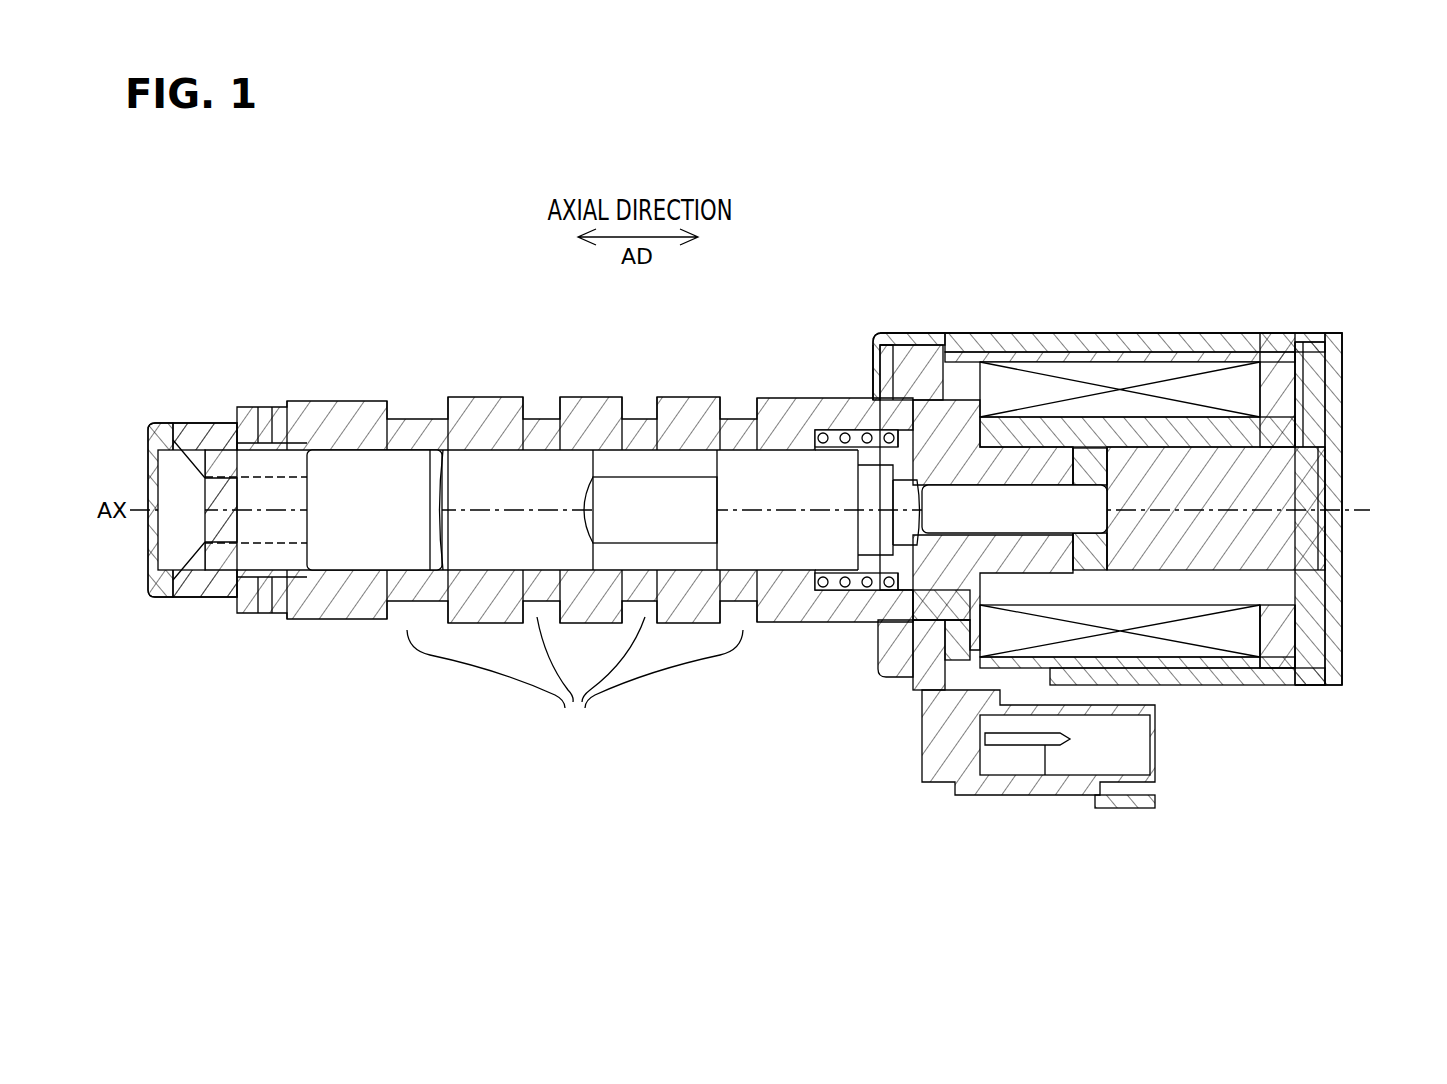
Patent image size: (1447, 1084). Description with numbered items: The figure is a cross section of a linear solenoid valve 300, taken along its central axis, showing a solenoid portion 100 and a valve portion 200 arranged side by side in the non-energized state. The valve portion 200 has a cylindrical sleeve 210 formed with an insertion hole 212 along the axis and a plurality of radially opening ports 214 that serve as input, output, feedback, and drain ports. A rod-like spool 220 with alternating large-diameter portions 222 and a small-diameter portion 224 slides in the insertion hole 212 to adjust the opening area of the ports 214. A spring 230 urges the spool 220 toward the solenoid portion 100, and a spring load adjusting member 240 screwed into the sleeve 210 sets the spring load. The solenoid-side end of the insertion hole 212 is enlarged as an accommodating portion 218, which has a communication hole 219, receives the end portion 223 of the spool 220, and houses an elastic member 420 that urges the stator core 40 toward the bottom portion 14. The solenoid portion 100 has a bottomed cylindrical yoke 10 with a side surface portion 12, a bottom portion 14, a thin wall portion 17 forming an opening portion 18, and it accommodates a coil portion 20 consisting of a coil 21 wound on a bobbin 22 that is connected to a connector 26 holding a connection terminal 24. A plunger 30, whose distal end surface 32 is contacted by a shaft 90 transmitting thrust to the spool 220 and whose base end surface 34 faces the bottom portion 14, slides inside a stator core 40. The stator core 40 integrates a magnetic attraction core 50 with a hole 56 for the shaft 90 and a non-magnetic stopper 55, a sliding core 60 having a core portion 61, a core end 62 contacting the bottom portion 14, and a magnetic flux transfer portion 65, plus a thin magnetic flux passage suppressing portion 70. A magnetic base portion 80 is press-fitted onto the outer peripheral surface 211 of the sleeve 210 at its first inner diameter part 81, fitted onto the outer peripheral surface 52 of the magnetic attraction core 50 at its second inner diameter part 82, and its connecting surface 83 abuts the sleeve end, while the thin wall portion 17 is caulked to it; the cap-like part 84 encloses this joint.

The solenoid valve 300 is at (320, 212).
The valve portion 200 is at (146, 866).
The solenoid portion 100 is at (880, 866).
The yoke 10 is at (1368, 325).
The side surface portion 12 is at (1015, 345).
The bottom portion 14 is at (1318, 432).
The thin wall portion 17 is at (913, 345).
The opening portion 18 is at (905, 345).
The coil portion 20 is at (1340, 753).
The coil 21 is at (1203, 633).
The bobbin 22 is at (1273, 630).
The connection terminal 24 is at (1040, 785).
The connector 26 is at (1162, 806).
The plunger 30 is at (1287, 537).
The distal end surface 32 is at (1097, 440).
The base end surface 34 is at (1328, 520).
The stator core 40 is at (1273, 242).
The magnetic attraction core 50 is at (1045, 457).
The outer peripheral surface 52 is at (990, 500).
The stopper 55 is at (1093, 565).
The hole 56 is at (1000, 480).
The sliding core 60 is at (1285, 408).
The core portion 61 is at (1330, 488).
The core end 62 is at (1330, 462).
The magnetic flux transfer portion 65 is at (1335, 390).
The magnetic flux passage suppressing portion 70 is at (1140, 437).
The base portion 80 is at (862, 768).
The first inner diameter part 81 is at (895, 665).
The second inner diameter part 82 is at (930, 640).
The connecting surface 83 is at (915, 690).
The housing cap 84 is at (937, 340).
The shaft 90 is at (893, 640).
The sleeve 210 is at (487, 397).
The outer peripheral surface 211 is at (876, 357).
The insertion hole 212 is at (345, 475).
The ports 214 is at (575, 683).
The accommodating portion 218 is at (855, 455).
The communication hole 219 is at (885, 620).
The spool 220 is at (740, 487).
The large-diameter portions 222 is at (543, 483).
The end portion 223 is at (870, 540).
The small-diameter portion 224 is at (638, 487).
The spring 230 is at (255, 440).
The spring load adjusting member 240 is at (183, 440).
The elastic member 420 is at (850, 582).